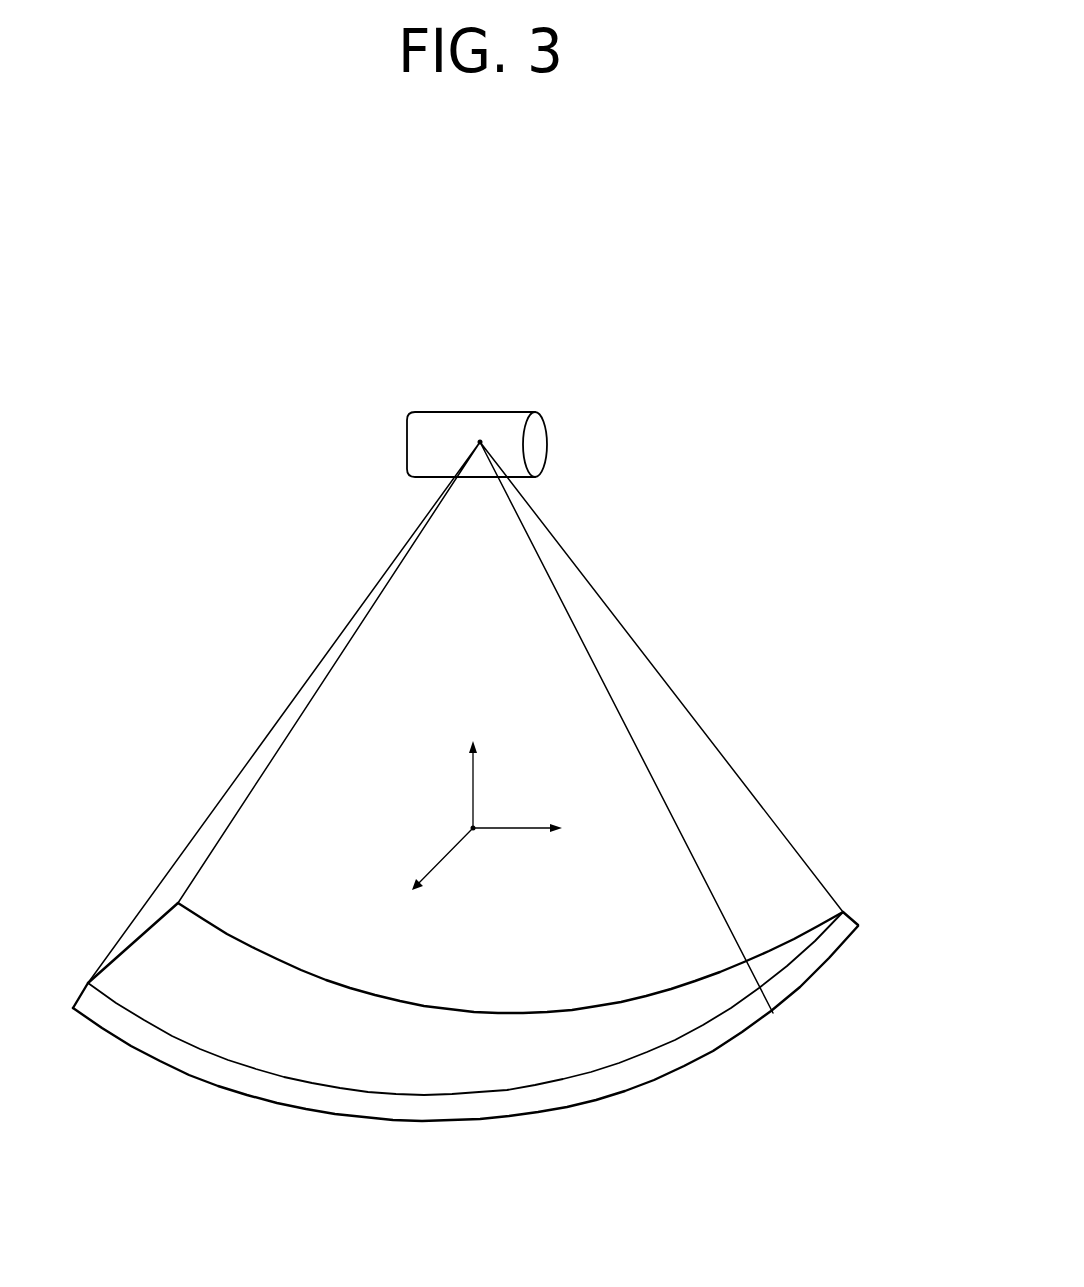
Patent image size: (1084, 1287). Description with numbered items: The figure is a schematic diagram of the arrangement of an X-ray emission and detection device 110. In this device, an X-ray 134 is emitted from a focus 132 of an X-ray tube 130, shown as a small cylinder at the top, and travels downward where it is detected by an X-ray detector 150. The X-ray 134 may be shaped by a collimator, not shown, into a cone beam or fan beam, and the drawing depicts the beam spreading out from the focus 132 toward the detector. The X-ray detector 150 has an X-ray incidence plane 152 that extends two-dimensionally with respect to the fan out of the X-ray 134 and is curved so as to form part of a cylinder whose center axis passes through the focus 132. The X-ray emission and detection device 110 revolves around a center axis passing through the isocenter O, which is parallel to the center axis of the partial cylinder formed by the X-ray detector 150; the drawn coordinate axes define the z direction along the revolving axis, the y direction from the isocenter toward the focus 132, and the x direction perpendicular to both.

The X-ray emission and detection device 110 is at (608, 197).
The X-ray tube 130 is at (517, 412).
The focus 132 is at (482, 442).
The X-ray 134 is at (627, 630).
The X-ray detector 150 is at (817, 953).
The X-ray incidence plane 152 is at (675, 1020).